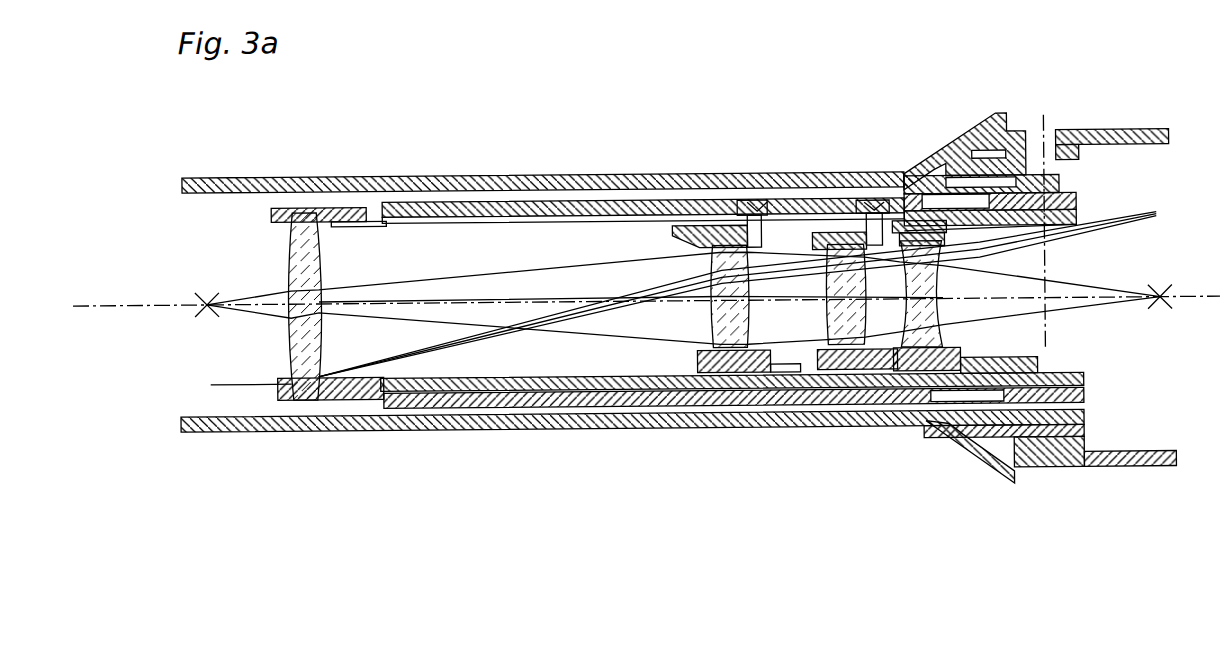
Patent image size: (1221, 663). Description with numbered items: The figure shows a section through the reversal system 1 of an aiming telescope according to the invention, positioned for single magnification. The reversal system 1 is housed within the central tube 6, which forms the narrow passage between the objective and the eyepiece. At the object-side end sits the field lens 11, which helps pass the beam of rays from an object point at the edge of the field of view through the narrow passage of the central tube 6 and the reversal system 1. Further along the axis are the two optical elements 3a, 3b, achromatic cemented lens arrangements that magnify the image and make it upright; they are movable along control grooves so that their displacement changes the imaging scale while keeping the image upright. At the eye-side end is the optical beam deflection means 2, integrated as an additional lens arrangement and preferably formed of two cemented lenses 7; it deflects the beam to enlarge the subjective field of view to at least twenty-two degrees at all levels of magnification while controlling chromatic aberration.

The reversal system 1 is at (593, 187).
The optical beam deflection means 2 is at (922, 364).
The optical element 3a is at (758, 384).
The optical element 3b is at (854, 362).
The central tube 6 is at (707, 428).
The lenses 7 is at (905, 199).
The field lens 11 is at (297, 345).